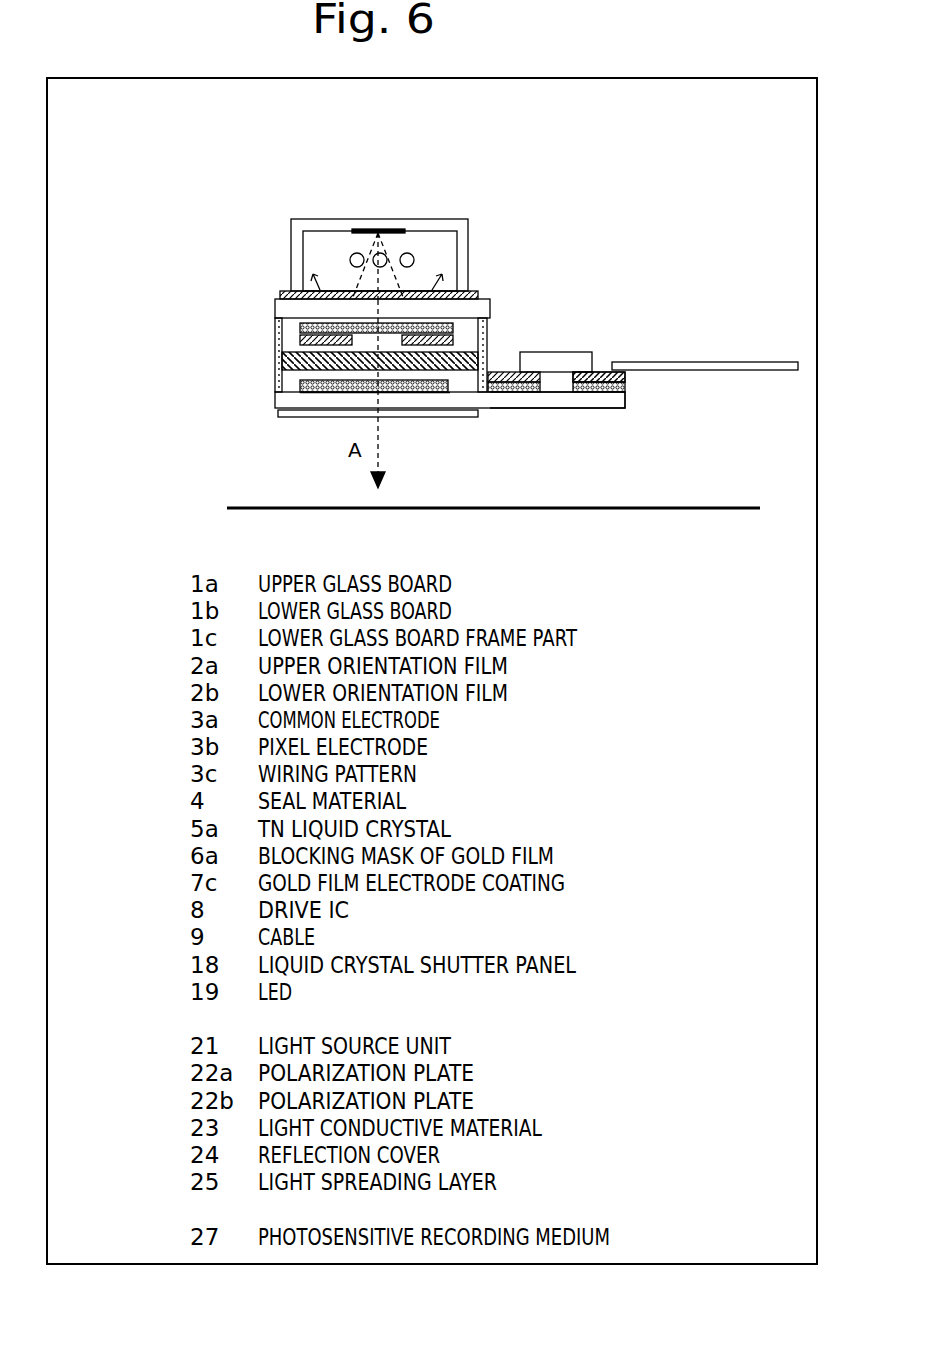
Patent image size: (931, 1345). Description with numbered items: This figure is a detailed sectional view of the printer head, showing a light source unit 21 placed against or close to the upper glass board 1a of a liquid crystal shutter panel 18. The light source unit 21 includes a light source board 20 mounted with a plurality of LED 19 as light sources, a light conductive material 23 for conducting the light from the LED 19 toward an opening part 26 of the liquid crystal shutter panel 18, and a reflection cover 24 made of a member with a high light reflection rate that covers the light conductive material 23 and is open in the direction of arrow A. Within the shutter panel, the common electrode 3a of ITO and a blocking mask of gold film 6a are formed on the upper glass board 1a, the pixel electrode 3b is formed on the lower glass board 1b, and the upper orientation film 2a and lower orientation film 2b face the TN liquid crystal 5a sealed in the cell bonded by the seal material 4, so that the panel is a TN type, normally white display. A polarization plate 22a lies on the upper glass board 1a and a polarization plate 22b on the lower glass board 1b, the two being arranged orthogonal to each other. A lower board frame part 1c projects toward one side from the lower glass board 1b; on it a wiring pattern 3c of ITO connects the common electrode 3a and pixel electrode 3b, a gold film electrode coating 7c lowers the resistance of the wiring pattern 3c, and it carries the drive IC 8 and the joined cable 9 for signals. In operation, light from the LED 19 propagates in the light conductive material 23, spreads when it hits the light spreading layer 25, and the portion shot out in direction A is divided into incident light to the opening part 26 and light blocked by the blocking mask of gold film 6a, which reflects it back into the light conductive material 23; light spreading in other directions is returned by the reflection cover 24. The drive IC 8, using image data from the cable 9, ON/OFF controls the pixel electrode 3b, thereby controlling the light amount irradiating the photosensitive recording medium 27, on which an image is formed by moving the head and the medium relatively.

The upper glass board 1a is at (275, 310).
The lower glass board 1b is at (275, 405).
The lower board frame part 1c is at (607, 260).
The upper orientation film 2a is at (300, 328).
The lower orientation film 2b is at (300, 385).
The common electrode 3a is at (300, 340).
The pixel electrode 3b is at (315, 392).
The wiring pattern 3c is at (507, 392).
The seal material 4 is at (277, 352).
The TN liquid crystal 5a is at (282, 363).
The blocking mask of gold film 6a is at (488, 332).
The gold film electrode coating 7c is at (605, 372).
The drive IC 8 is at (552, 352).
The cable 9 is at (700, 362).
The liquid crystal shutter panel 18 is at (135, 427).
The LED 19 is at (372, 240).
The light source board 20 is at (326, 1019).
The light source unit 21 is at (135, 205).
The polarization plate 22a is at (478, 291).
The polarization plate 22b is at (422, 417).
The light conductive material 23 is at (330, 240).
The reflection cover 24 is at (291, 232).
The light spreading layer 25 is at (397, 229).
The opening part 26 is at (292, 1209).
The photosensitive recording medium 27 is at (227, 508).